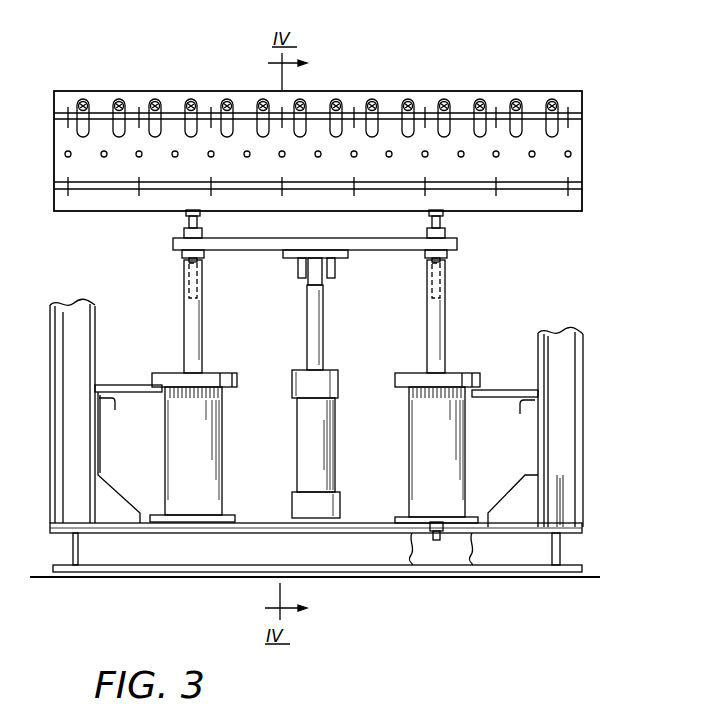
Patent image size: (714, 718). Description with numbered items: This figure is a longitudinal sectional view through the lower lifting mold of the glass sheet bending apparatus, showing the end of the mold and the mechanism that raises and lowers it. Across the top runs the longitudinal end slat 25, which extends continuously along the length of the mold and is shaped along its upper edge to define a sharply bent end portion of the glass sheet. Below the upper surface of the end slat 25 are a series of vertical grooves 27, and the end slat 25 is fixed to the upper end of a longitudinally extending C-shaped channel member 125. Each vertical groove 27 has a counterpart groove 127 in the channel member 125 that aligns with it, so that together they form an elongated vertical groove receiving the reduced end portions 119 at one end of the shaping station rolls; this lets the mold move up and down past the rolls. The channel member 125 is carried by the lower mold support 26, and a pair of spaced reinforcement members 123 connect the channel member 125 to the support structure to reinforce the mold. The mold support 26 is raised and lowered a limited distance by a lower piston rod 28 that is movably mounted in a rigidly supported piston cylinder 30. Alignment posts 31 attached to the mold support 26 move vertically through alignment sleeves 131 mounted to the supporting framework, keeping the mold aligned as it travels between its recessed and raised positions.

The longitudinal end slat 25 is at (352, 125).
The vertical groove 27 is at (552, 100).
The reduced end portions 119 is at (151, 98).
The counterpart groove 127 is at (560, 132).
The C-shaped channel member 125 is at (573, 178).
The reinforcement members 123 is at (185, 213).
The lower mold support 26 is at (293, 239).
The alignment posts 31 is at (186, 283).
The lower piston rod 28 is at (323, 297).
The piston cylinder 30 is at (336, 436).
The alignment sleeves 131 is at (184, 340).